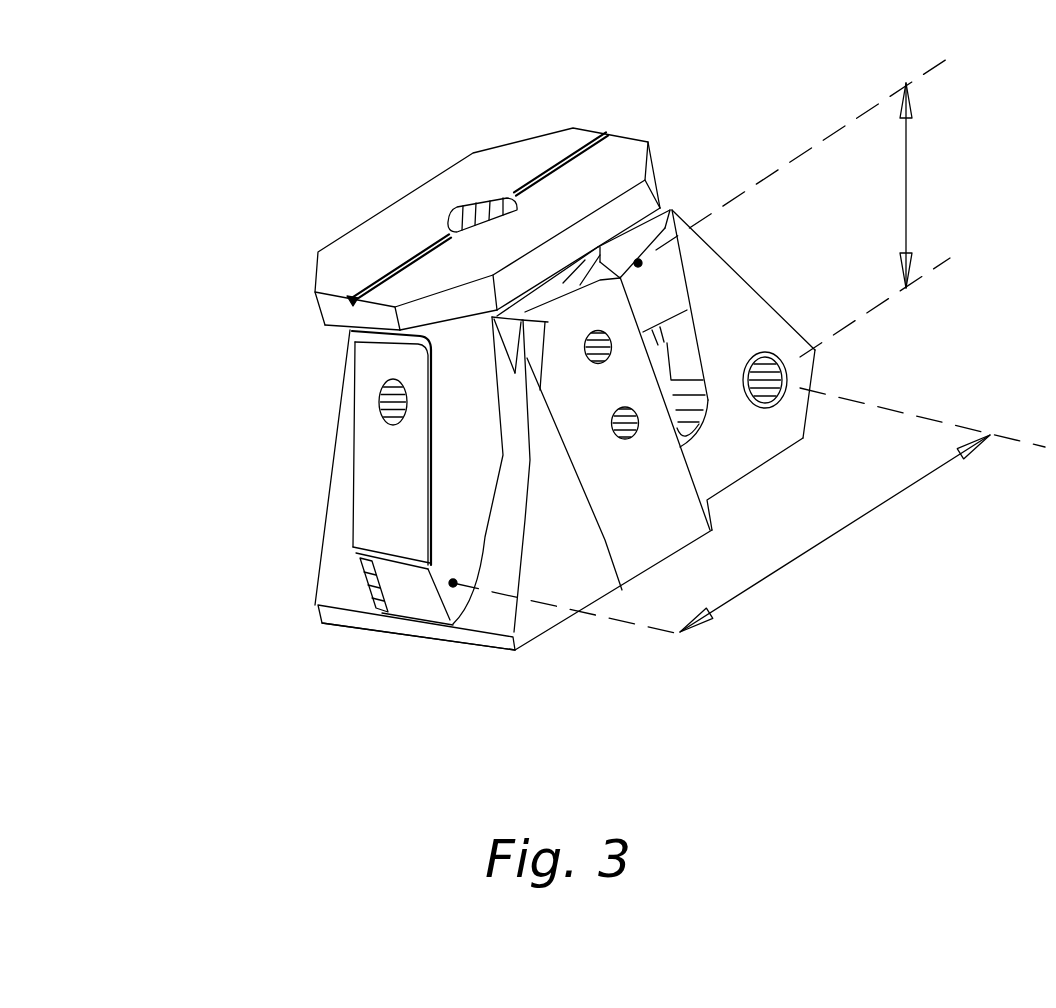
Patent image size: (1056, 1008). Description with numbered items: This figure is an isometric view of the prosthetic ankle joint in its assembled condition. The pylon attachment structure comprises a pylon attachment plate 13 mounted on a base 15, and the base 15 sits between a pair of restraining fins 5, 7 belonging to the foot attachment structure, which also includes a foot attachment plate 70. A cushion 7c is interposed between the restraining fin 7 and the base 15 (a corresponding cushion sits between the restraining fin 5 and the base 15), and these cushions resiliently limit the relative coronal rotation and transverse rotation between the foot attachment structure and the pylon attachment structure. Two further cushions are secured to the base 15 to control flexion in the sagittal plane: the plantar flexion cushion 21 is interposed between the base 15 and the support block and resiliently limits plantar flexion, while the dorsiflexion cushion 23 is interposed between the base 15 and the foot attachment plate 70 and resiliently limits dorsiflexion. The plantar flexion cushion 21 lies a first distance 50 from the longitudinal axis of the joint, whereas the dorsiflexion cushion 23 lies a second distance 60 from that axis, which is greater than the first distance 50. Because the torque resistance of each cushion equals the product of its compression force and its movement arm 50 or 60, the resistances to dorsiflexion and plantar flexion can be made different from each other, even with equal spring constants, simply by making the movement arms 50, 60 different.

The restraining fin 5 is at (348, 462).
The restraining fin 7 is at (566, 472).
The cushion 7c is at (525, 520).
The pylon attachment plate 13 is at (430, 210).
The base 15 is at (355, 510).
The plantar flexion cushion 21 is at (640, 260).
The dorsiflexion cushion 23 is at (407, 600).
The first distance 50 is at (906, 192).
The second distance 60 is at (837, 533).
The foot attachment plate 70 is at (419, 643).